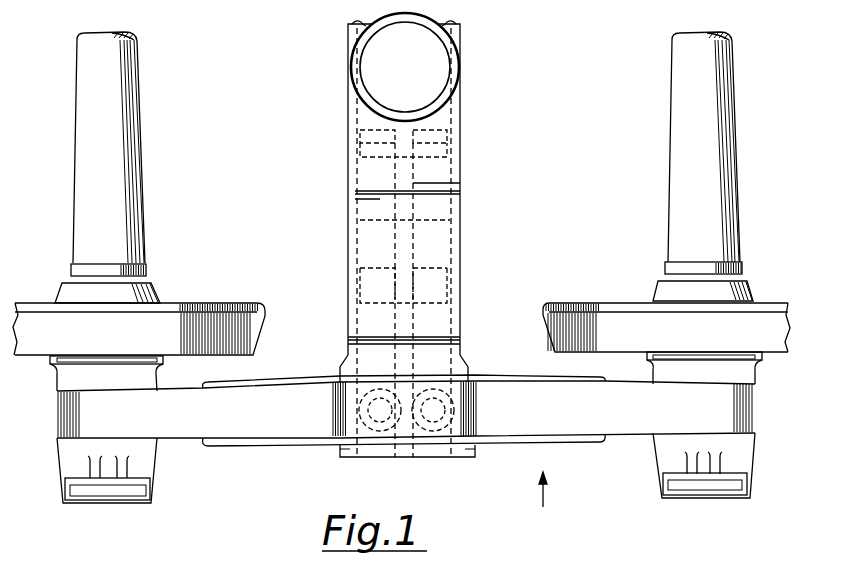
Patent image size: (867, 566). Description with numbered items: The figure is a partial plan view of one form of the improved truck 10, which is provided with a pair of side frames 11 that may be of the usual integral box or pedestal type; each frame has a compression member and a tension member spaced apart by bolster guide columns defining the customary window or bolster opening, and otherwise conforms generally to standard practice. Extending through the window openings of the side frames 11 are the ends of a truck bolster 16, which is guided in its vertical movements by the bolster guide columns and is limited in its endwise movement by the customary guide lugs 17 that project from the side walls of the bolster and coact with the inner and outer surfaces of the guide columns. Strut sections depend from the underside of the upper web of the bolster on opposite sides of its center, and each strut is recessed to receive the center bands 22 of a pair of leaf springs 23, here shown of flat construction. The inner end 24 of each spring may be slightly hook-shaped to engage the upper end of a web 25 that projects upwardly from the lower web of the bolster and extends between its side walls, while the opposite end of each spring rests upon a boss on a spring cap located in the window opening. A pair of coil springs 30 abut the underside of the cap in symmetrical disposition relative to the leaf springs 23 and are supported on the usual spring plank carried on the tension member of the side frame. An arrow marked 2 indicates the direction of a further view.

The faucet assembly 10 is at (401, 258).
The mounting bar 11 is at (262, 441).
The spout body 16 is at (461, 91).
The flanges 17 is at (340, 368).
The valve chamber 22 is at (410, 262).
The passage 23 is at (423, 221).
The inlet ports 24 is at (362, 130).
The mixing chamber 25 is at (372, 152).
The inlet openings 30 is at (381, 431).
The section line for FIG. 2 is at (552, 490).